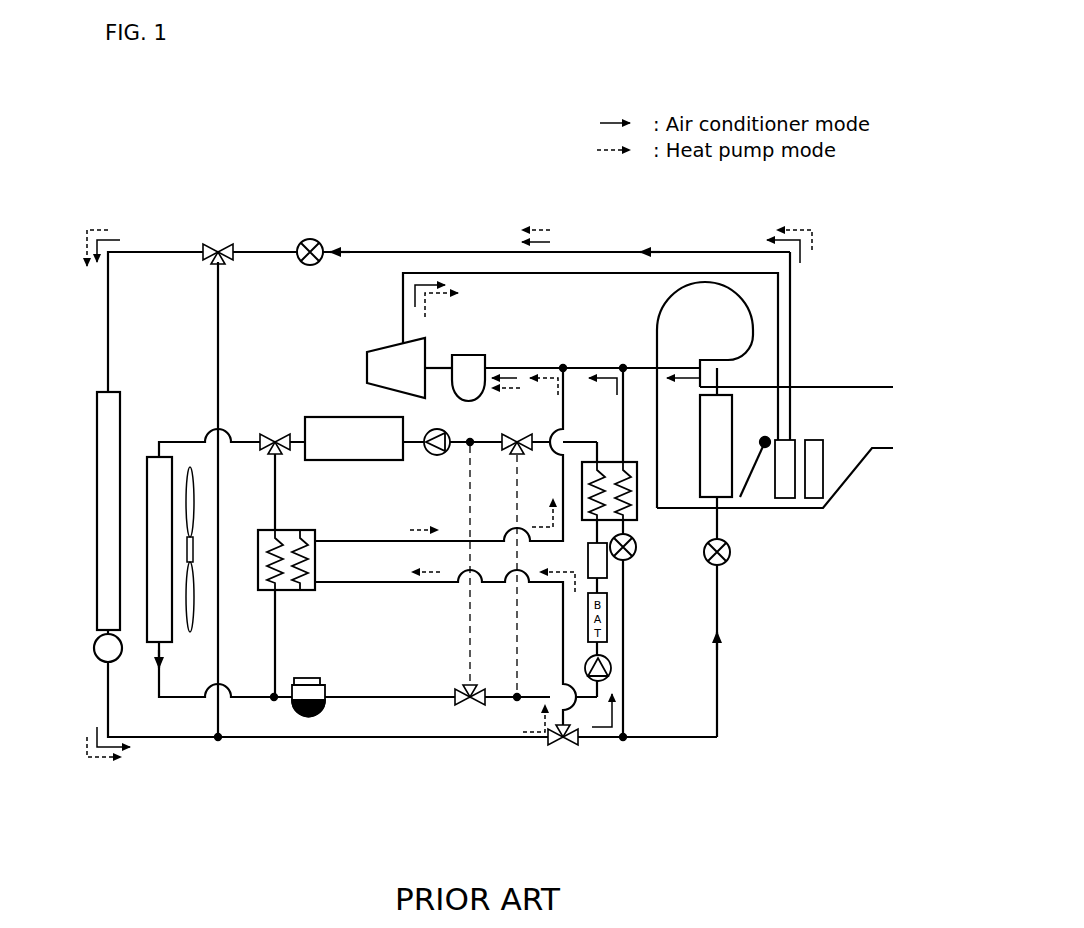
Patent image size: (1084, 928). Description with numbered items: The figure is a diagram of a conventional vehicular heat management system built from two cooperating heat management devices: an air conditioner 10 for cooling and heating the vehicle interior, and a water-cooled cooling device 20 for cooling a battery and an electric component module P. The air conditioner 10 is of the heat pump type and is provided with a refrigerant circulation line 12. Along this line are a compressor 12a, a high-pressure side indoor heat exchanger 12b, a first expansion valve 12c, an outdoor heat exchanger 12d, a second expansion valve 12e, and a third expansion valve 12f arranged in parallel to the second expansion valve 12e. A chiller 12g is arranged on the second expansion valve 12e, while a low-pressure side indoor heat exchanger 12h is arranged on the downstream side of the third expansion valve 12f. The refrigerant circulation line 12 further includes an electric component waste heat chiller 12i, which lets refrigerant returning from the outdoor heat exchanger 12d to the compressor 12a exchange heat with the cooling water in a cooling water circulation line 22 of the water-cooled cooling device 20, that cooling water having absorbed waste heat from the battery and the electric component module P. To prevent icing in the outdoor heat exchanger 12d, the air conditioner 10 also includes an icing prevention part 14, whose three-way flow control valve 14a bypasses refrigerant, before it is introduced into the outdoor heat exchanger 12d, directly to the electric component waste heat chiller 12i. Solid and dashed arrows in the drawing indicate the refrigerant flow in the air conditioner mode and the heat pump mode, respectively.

The air conditioner 10 is at (453, 244).
The refrigerant circulation line 12 is at (388, 248).
The compressor 12a is at (372, 350).
The high-pressure side indoor heat exchanger 12b is at (790, 440).
The first expansion valve 12c is at (309, 238).
The outdoor heat exchanger 12d is at (97, 403).
The second expansion valve 12e is at (638, 549).
The third expansion valve 12f is at (723, 565).
The chiller 12g is at (638, 514).
The low-pressure side indoor heat exchanger 12h is at (723, 490).
The electric component waste heat chiller 12i is at (263, 594).
The icing prevention part 14 is at (228, 219).
The three-way flow control valve 14a is at (222, 243).
The water-cooled cooling device 20 is at (418, 704).
The cooling water circulation line 22 is at (360, 701).
The electric component module P is at (323, 416).